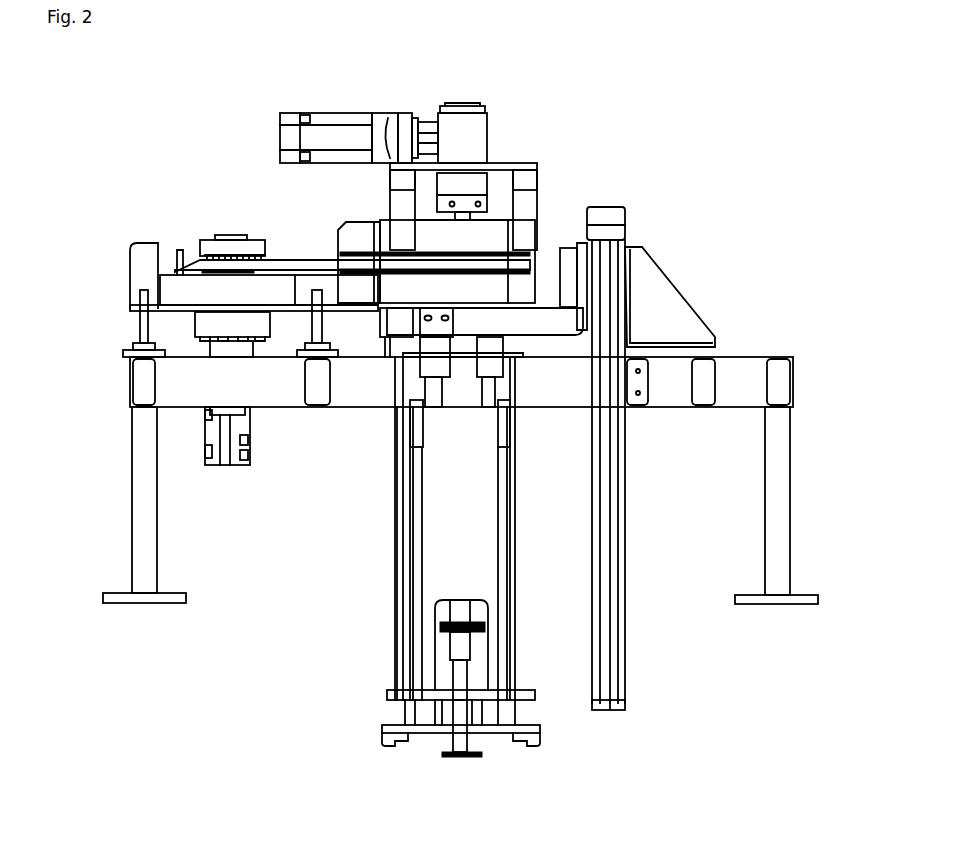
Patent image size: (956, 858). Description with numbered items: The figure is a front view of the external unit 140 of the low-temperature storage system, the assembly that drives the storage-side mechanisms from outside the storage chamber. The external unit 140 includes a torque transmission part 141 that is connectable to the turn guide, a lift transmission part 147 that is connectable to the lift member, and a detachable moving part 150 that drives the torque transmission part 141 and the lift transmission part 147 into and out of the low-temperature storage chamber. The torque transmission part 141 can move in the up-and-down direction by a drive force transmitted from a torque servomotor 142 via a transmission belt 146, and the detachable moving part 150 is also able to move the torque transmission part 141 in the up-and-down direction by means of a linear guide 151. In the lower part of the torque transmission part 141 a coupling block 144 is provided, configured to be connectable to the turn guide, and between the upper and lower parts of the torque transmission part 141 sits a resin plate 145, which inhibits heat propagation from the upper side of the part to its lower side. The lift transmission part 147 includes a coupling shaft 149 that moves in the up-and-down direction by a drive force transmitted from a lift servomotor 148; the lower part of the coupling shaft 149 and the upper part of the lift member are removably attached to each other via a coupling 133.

The external unit 140 is at (168, 80).
The lift servomotor 148 is at (342, 133).
The transmission belt 146 is at (298, 263).
The detachable moving part 150 is at (597, 265).
The linear guide 151 is at (487, 365).
The torque servomotor 142 is at (238, 423).
The resin plate 145 is at (442, 545).
The torque transmission part 141 is at (312, 541).
The coupling shaft 149 is at (463, 670).
The lift transmission part 147 is at (505, 722).
The coupling block 144 is at (395, 732).
The coupling 133 is at (462, 742).